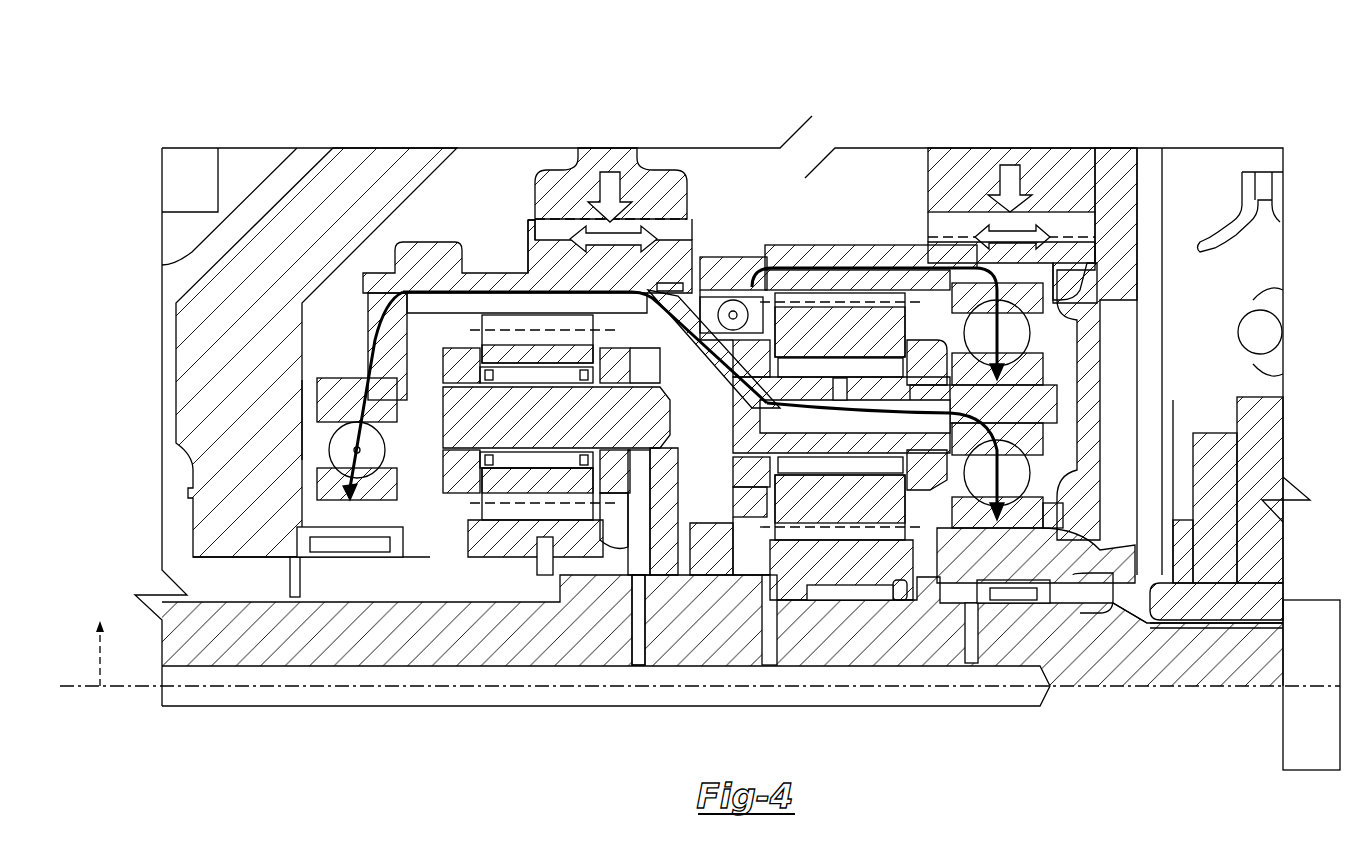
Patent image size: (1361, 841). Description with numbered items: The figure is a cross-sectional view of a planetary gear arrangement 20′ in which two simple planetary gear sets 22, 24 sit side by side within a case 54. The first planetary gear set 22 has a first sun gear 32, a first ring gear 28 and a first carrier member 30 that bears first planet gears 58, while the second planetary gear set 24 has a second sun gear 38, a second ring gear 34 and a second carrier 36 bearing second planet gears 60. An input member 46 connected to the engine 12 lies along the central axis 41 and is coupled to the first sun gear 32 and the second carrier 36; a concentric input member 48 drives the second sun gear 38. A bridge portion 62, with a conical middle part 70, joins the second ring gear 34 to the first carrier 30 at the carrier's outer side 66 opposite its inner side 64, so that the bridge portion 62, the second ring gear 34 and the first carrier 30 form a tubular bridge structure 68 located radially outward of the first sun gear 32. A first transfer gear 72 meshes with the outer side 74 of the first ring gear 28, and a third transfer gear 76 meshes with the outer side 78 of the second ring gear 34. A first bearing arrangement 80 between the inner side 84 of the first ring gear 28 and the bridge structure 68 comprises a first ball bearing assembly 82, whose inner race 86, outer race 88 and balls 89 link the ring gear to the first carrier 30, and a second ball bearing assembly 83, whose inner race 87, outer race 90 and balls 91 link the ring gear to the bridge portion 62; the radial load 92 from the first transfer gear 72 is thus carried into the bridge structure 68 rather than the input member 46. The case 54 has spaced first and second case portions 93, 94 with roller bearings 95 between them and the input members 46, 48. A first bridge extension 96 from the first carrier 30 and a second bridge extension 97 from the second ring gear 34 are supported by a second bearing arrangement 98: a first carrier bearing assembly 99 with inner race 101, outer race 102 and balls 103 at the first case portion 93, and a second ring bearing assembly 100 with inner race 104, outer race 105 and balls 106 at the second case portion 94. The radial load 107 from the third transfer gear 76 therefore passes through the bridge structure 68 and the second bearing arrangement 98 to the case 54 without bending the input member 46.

The planetary gear arrangement 20′ is at (718, 68).
The engine 12 is at (1298, 697).
The first planetary gear set 22 is at (730, 482).
The second planetary gear set 24 is at (466, 532).
The first ring gear 28 is at (736, 258).
The first carrier member 30 is at (1042, 405).
The first sun gear 32 is at (826, 570).
The second ring gear 34 is at (496, 266).
The second carrier 36 is at (616, 468).
The second sun gear 38 is at (510, 545).
The central axis 41 is at (1145, 690).
The input member 46 is at (1220, 665).
The input member 48 is at (345, 585).
The case 54 is at (382, 170).
The first planet gears 58 is at (868, 330).
The second planet gears 60 is at (557, 350).
The bridge portion 62 is at (652, 324).
The inner side 64 is at (757, 475).
The outer side 66 is at (825, 385).
The bridge structure 68 is at (356, 330).
The middle part 70 is at (672, 355).
The first transfer gear 72 is at (1070, 182).
The outer side 74 is at (1080, 240).
The third transfer gear 76 is at (666, 185).
The outer side 78 is at (528, 234).
The first bearing arrangement 80 is at (1136, 356).
The first ball bearing assembly 82 is at (1040, 333).
The second ball bearing assembly 83 is at (693, 290).
The inner side 84 is at (1085, 297).
The inner race 86 is at (1042, 370).
The inner race 87 is at (712, 346).
The outer race 88 is at (1010, 290).
The balls 89 is at (966, 337).
The outer race 90 is at (738, 305).
The balls 91 is at (746, 314).
The radial load 92 is at (885, 266).
The first case portion 93 is at (1020, 560).
The second case portion 94 is at (330, 510).
The roller bearings 95 is at (325, 556).
The first bridge extension 96 is at (1042, 425).
The second bridge extension 97 is at (350, 383).
The second bearing arrangement 98 is at (292, 415).
The first carrier bearing assembly 99 is at (1042, 472).
The second ring bearing assembly 100 is at (322, 445).
The inner race 101 is at (912, 556).
The outer race 102 is at (967, 413).
The balls 103 is at (960, 513).
The inner race 104 is at (385, 486).
The outer race 105 is at (380, 415).
The balls 106 is at (342, 452).
The radial load 107 is at (432, 290).